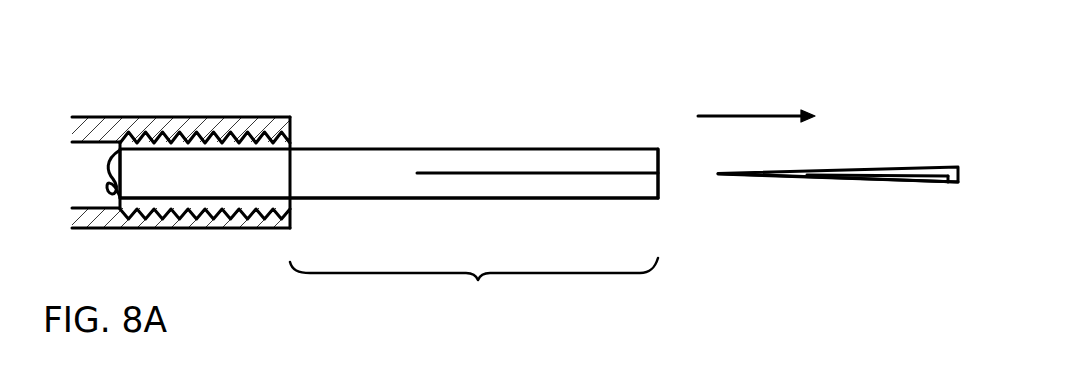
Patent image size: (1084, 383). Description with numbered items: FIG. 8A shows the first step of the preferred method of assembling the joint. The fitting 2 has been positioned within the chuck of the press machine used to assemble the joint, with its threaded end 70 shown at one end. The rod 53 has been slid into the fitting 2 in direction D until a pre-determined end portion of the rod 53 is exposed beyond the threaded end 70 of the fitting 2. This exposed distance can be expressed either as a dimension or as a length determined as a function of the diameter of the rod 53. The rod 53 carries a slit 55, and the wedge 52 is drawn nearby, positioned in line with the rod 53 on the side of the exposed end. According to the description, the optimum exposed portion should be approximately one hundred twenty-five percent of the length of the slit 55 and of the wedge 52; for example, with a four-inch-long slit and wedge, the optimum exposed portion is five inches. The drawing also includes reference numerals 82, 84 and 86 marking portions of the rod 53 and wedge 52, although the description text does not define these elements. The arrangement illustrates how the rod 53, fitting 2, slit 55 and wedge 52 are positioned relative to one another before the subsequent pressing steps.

The fitting 2 is at (135, 117).
The threaded end 70 is at (268, 104).
The inner tube 82 is at (555, 135).
The rod 53 is at (403, 198).
The slit 55 is at (576, 190).
The distal end of tube 84 is at (676, 173).
The wedge 52 is at (947, 182).
The blade cutting edge 86 is at (849, 197).
The direction D is at (750, 116).